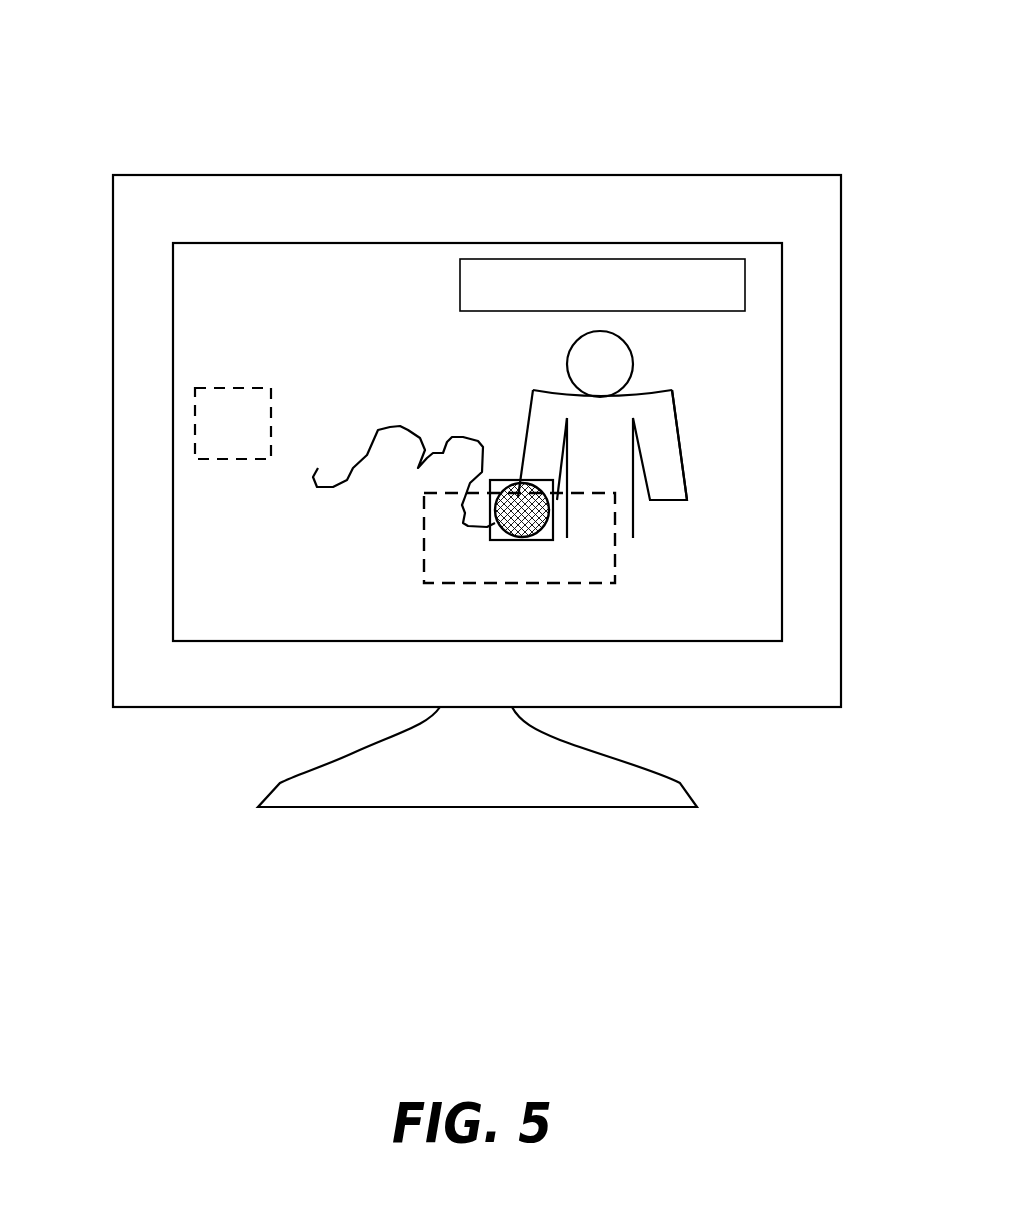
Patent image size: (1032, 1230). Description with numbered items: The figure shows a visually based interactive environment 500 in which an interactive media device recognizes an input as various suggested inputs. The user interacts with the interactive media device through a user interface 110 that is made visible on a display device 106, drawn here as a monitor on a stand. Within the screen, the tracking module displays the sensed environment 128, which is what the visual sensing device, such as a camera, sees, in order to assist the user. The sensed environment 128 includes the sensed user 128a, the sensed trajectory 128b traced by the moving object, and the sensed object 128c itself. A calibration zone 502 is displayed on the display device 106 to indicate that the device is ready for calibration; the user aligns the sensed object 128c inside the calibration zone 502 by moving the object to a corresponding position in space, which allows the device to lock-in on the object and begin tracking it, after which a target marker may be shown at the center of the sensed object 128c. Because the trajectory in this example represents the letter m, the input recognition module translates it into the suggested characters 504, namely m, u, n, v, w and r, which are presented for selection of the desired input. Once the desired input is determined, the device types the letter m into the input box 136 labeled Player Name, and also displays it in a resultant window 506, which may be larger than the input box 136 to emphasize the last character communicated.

The visually based interactive environment 500 is at (184, 18).
The display device 106 is at (233, 707).
The user interface 110 is at (428, 242).
The input box 136 is at (603, 259).
The sensed environment 128 is at (668, 343).
The sensed user 128a is at (675, 522).
The sensed trajectory 128b is at (378, 425).
The sensed object 128c is at (518, 490).
The calibration zone 502 is at (553, 505).
The suggested characters 504 is at (560, 602).
The resultant window 506 is at (193, 397).